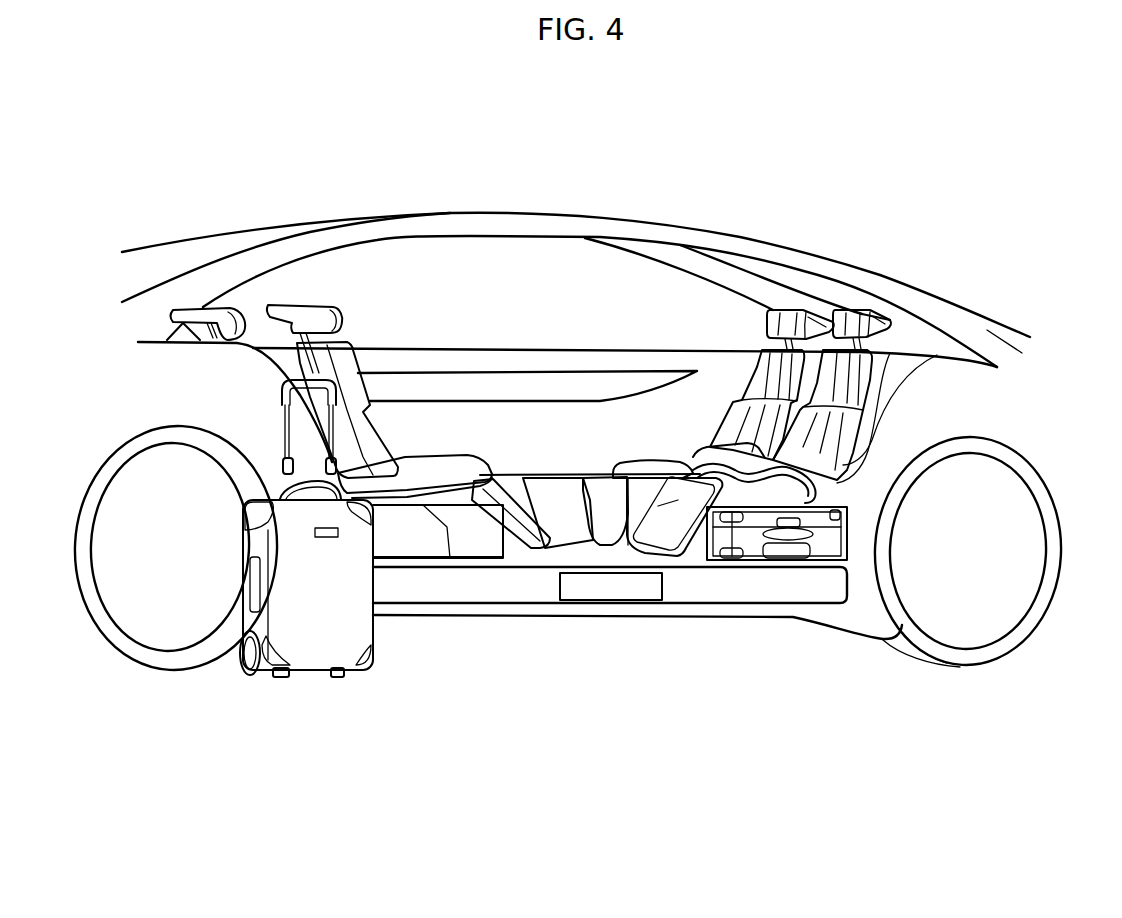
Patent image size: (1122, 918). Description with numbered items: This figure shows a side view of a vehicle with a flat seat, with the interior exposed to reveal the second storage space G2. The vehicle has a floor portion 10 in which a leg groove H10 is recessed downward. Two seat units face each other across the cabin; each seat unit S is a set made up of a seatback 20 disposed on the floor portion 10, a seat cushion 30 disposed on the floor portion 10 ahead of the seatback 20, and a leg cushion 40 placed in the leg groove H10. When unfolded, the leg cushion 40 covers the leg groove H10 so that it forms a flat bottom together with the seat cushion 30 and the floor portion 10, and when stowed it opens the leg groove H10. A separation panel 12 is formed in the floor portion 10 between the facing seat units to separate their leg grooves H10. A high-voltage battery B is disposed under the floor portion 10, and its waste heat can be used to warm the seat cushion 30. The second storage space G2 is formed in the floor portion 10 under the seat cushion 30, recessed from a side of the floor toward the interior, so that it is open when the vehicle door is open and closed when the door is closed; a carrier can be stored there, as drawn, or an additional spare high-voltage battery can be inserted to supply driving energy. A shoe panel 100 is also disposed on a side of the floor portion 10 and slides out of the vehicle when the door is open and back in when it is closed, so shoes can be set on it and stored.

The separation panel 12 is at (598, 455).
The seat unit S is at (884, 300).
The seatback 20 is at (837, 390).
The seat cushion 30 is at (820, 350).
The leg cushion 40 is at (675, 518).
The floor portion 10 is at (600, 498).
The leg groove H10 is at (619, 518).
The shoe panel 100 is at (612, 588).
The high-voltage battery B is at (507, 587).
The second storage space G2 is at (420, 545).